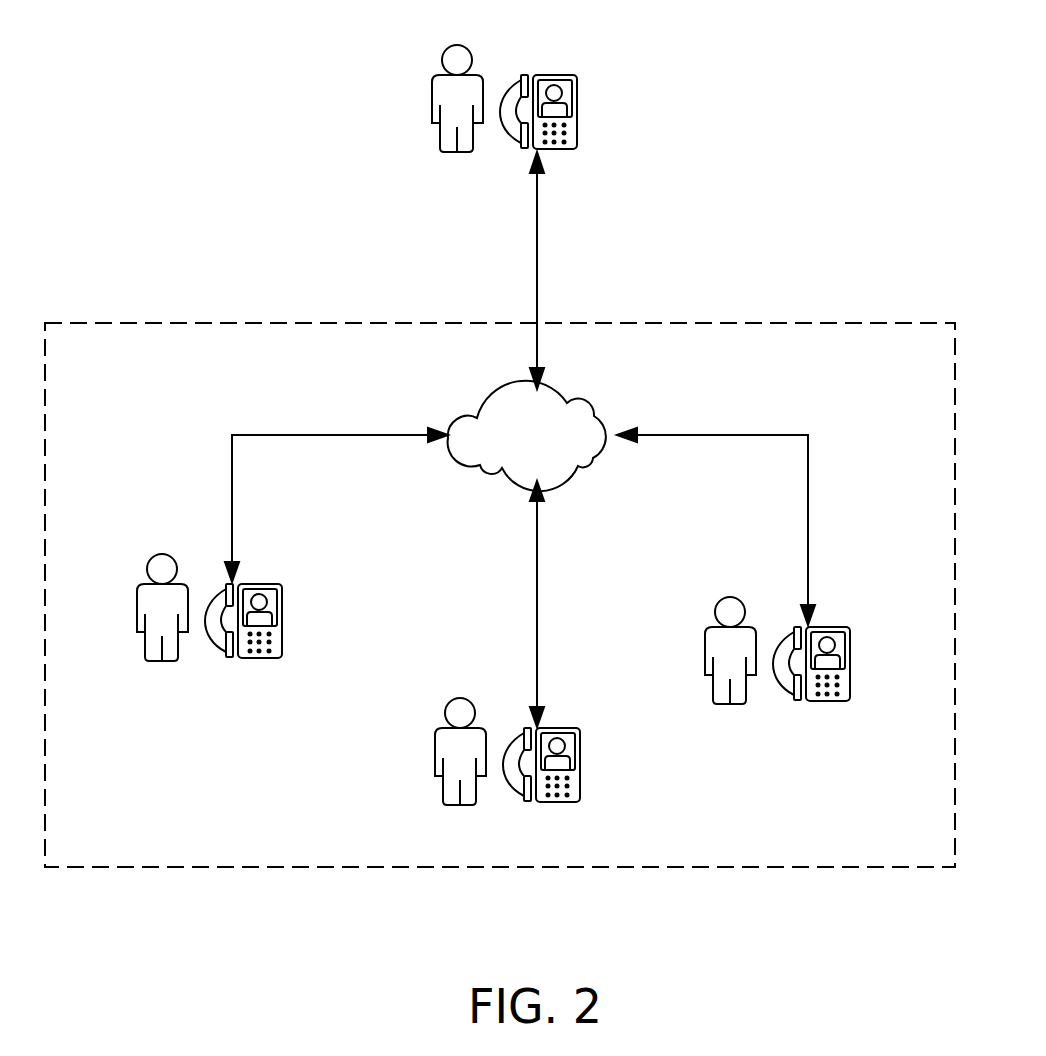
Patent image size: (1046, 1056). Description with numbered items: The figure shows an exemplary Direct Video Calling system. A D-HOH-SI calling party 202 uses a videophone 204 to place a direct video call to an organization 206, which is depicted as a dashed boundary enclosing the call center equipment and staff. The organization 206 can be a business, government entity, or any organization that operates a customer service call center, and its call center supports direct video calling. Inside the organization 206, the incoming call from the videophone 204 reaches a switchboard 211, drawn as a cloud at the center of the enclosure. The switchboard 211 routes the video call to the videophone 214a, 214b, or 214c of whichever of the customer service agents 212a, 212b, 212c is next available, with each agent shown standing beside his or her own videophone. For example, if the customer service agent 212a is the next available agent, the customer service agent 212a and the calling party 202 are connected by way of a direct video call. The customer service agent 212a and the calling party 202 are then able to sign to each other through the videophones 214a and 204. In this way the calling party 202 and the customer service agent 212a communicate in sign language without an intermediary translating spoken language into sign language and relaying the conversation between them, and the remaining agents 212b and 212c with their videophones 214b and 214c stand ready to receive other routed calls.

The D-HOH-SI calling party 202 is at (432, 85).
The videophone 204 is at (543, 73).
The organization 206 is at (732, 322).
The switchboard 211 is at (557, 448).
The customer service agent 212a is at (135, 600).
The videophone 214a is at (280, 620).
The customer service agent 212b is at (433, 742).
The videophone 214b is at (578, 767).
The customer service agent 212c is at (705, 638).
The videophone 214c is at (848, 663).